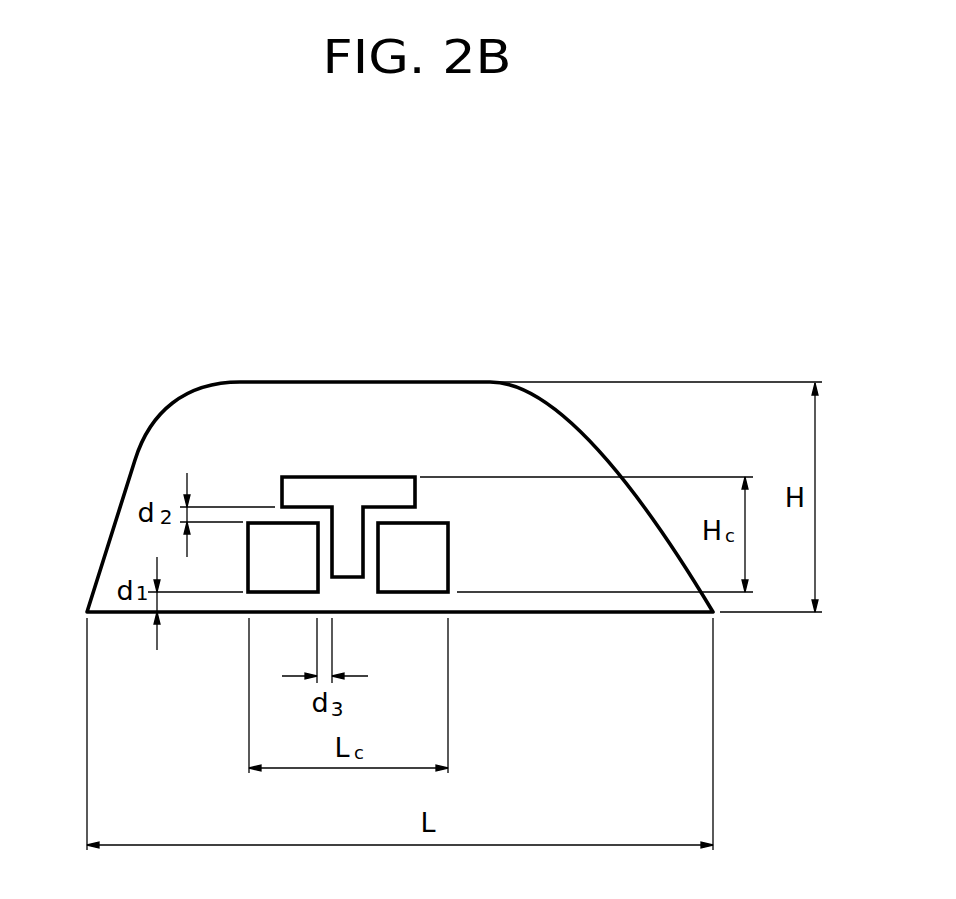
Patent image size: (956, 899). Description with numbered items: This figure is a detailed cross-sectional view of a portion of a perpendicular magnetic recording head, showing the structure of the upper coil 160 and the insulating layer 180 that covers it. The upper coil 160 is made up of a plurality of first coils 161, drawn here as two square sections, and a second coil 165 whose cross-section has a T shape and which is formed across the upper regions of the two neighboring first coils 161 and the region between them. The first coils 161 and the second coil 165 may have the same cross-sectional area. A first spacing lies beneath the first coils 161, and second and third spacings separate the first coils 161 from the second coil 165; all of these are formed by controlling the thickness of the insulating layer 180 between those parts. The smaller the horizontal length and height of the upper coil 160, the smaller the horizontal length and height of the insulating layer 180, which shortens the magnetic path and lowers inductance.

The insulating layer 180 is at (248, 425).
The upper coil 160 is at (308, 305).
The second coil 165 is at (318, 488).
The first coil 161 is at (300, 542).